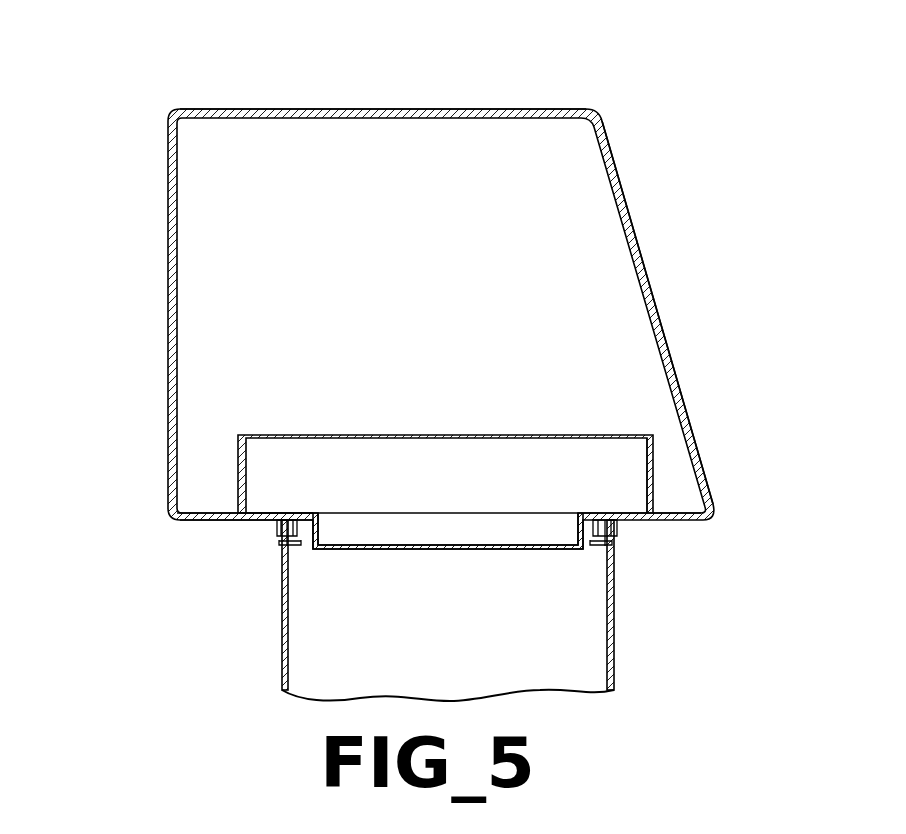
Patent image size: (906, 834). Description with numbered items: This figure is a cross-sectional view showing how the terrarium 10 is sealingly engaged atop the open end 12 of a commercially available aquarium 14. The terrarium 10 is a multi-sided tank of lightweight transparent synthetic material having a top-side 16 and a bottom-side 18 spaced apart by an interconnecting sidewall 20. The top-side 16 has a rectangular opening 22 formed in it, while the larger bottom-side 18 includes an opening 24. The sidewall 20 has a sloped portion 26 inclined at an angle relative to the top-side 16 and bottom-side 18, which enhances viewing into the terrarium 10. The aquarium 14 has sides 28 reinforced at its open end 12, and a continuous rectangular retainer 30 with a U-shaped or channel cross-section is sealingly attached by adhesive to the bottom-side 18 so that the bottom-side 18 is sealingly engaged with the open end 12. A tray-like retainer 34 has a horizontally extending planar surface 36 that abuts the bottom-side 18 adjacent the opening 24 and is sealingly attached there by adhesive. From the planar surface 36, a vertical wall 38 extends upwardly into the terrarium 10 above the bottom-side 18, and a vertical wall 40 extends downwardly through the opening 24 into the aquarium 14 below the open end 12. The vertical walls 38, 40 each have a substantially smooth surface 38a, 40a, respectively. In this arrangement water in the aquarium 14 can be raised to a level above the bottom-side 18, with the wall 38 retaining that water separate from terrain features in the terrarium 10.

The terrarium 10 is at (662, 187).
The open end 12 is at (270, 530).
The aquarium 14 is at (622, 623).
The top-side 16 is at (210, 110).
The bottom-side 18 is at (200, 523).
The sidewall 20 is at (160, 334).
The rectangular opening 22 is at (533, 110).
The opening 24 is at (316, 510).
The sloped portion 26 is at (650, 290).
The sides 28 is at (282, 651).
The continuous rectangular retainer 30 is at (621, 531).
The retainer 34 is at (236, 450).
The planar surface 36 is at (284, 511).
The vertical wall 38 is at (658, 482).
The smooth surface 38a is at (648, 455).
The vertical wall 40 is at (293, 541).
The smooth surface 40a is at (578, 531).